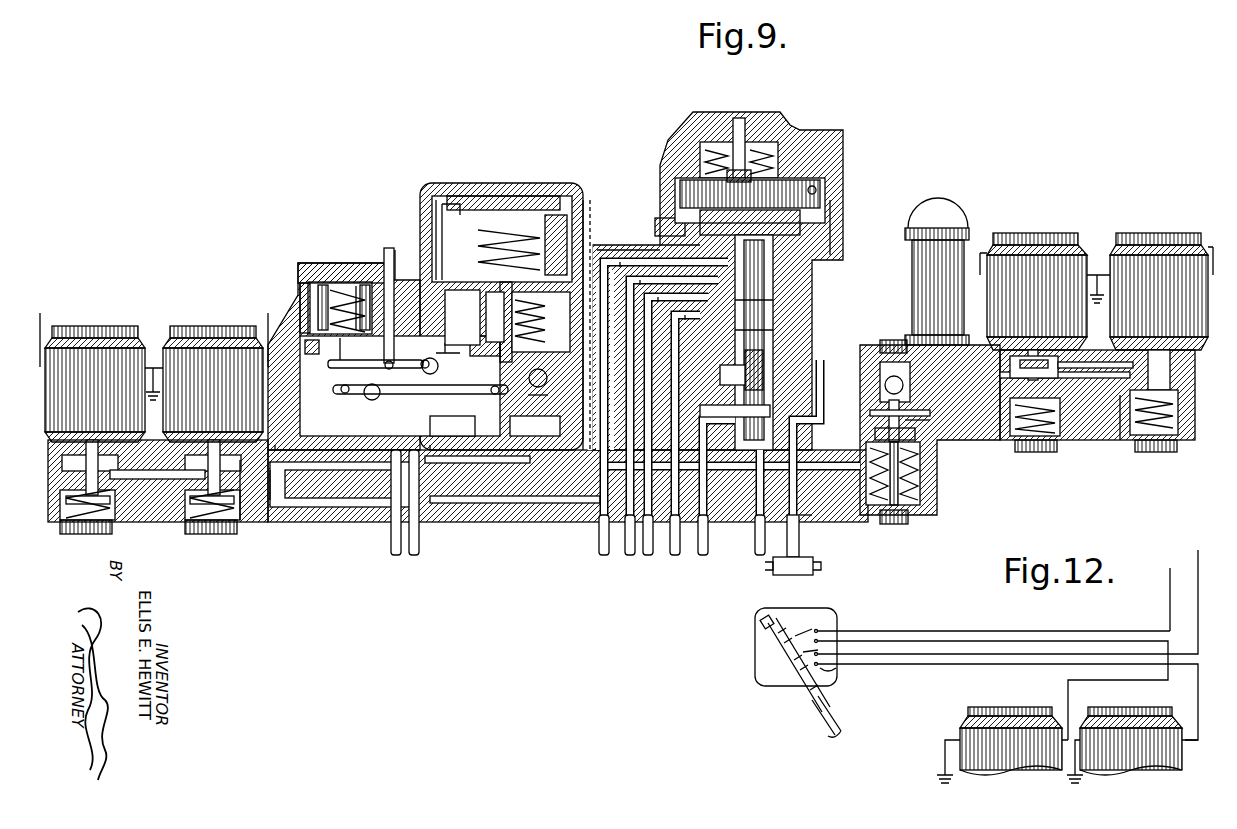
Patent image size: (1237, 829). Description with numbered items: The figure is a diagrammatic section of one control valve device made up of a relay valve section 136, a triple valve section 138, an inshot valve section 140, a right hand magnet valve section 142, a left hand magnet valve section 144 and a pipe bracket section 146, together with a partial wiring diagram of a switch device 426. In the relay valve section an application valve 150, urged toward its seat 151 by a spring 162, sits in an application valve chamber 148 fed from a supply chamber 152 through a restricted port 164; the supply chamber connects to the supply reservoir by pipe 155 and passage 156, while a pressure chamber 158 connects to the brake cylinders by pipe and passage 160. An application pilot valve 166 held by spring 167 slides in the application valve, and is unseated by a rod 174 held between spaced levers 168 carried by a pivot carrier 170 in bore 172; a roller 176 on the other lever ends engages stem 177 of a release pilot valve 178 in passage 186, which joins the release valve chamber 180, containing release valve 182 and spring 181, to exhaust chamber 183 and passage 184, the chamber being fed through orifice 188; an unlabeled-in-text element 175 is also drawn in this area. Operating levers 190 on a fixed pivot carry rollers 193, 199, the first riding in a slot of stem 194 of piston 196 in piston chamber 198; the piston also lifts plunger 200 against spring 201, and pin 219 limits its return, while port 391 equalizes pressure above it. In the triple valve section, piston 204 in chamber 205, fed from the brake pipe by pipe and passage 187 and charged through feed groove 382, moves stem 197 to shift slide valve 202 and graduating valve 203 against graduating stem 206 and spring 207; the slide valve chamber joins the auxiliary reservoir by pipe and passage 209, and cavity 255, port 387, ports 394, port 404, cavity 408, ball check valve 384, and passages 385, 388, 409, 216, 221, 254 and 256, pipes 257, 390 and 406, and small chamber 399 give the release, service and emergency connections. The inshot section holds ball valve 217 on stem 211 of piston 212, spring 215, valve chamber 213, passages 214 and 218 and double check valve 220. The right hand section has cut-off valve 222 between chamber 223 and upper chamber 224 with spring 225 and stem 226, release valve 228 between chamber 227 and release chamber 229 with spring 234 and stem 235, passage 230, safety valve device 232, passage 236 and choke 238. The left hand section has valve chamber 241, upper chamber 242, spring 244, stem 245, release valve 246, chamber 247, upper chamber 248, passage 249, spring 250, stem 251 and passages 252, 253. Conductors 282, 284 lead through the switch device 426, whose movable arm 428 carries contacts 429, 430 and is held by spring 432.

In FIG. 9, the relay valve section 136 is at (498, 183).
In FIG. 9, the triple valve section 138 is at (765, 128).
In FIG. 9, the inshot valve section 140 is at (868, 345).
In FIG. 9, the right hand magnet valve section 142 is at (1103, 440).
In FIG. 9, the left hand magnet valve section 144 is at (160, 520).
In FIG. 9, the pipe bracket section 146 is at (486, 522).
In FIG. 9, the application valve chamber 148 is at (345, 290).
In FIG. 9, the application valve 150 is at (366, 285).
In FIG. 9, the seat 151 is at (354, 350).
In FIG. 9, the supply chamber 152 is at (298, 268).
In FIG. 9, the pipe 155 is at (391, 550).
In FIG. 9, the passage 156 is at (295, 430).
In FIG. 9, the pressure chamber 158 is at (473, 345).
In FIG. 9, the pipe and passage 160 is at (419, 540).
In FIG. 9, the spring 162 is at (324, 285).
In FIG. 9, the restricted port 164 is at (302, 283).
In FIG. 9, the application pilot valve 166 is at (300, 300).
In FIG. 9, the spring 167 is at (352, 286).
In FIG. 9, the spaced levers 168 is at (345, 368).
In FIG. 9, the pivot carrier 170 is at (399, 355).
In FIG. 9, the bore 172 is at (389, 250).
In FIG. 9, the rod 174 is at (321, 351).
In FIG. 9, the stem 175 is at (520, 322).
In FIG. 9, the roller 176 is at (440, 373).
In FIG. 9, the stem 177 is at (452, 354).
In FIG. 9, the release pilot valve 178 is at (404, 280).
In FIG. 9, the release valve chamber 180 is at (585, 210).
In FIG. 9, the spring 181 is at (530, 232).
In FIG. 9, the release valve 182 is at (560, 215).
In FIG. 9, the exhaust chamber 183 is at (510, 196).
In FIG. 9, the passage 184 is at (582, 522).
In FIG. 9, the passage 186 is at (436, 200).
In FIG. 9, the pipe and passage 187 is at (800, 560).
In FIG. 9, the restricted orifice 188 is at (452, 210).
In FIG. 9, the operating levers 190 is at (420, 397).
In FIG. 9, the roller 193 is at (538, 378).
In FIG. 9, the stem 194 is at (538, 395).
In FIG. 9, the piston 196 is at (541, 425).
In FIG. 9, the stem 197 is at (773, 281).
In FIG. 9, the piston chamber 198 is at (512, 479).
In FIG. 9, the roller 199 is at (407, 374).
In FIG. 9, the plunger 200 is at (541, 322).
In FIG. 9, the spring 201 is at (534, 321).
In FIG. 9, the slide valve 202 is at (773, 300).
In FIG. 9, the graduating valve 203 is at (773, 360).
In FIG. 9, the piston 204 is at (805, 212).
In FIG. 9, the piston chamber 205 is at (825, 175).
In FIG. 9, the graduating stem 206 is at (780, 190).
In FIG. 9, the graduating spring 207 is at (745, 165).
In FIG. 9, the pipe and passage 209 is at (755, 520).
In FIG. 9, the stem 211 is at (935, 420).
In FIG. 9, the piston 212 is at (918, 440).
In FIG. 9, the valve chamber 213 is at (884, 362).
In FIG. 9, the passage 214 is at (1080, 440).
In FIG. 9, the spring 215 is at (920, 470).
In FIG. 9, the passage 216 is at (878, 304).
In FIG. 9, the ball valve 217 is at (905, 345).
In FIG. 9, the passage 218 is at (805, 522).
In FIG. 9, the pin 219 is at (608, 340).
In FIG. 9, the double check valve 220 is at (870, 382).
In FIG. 9, the passage 221 is at (695, 340).
In FIG. 9, the cut-off valve 222 is at (1130, 410).
In FIG. 9, the valve chamber 223 is at (1135, 420).
In FIG. 9, the upper chamber 224 is at (1164, 353).
In FIG. 9, the spring 225 is at (1155, 452).
In FIG. 9, the stem 226 is at (1159, 291).
In FIG. 9, the valve chamber 227 is at (1024, 340).
In FIG. 9, the release valve 228 is at (1034, 347).
In FIG. 9, the release chamber 229 is at (1036, 440).
In FIG. 9, the passage 230 is at (990, 340).
In FIG. 9, the safety valve device 232 is at (952, 225).
In FIG. 9, the spring 234 is at (1025, 452).
In FIG. 9, the stem 235 is at (1027, 348).
In FIG. 9, the passage 236 is at (1118, 440).
In FIG. 9, the choke 238 is at (1095, 353).
In FIG. 9, the valve chamber 241 is at (64, 525).
In FIG. 9, the upper chamber 242 is at (86, 440).
In FIG. 9, the spring 244 is at (80, 520).
In FIG. 9, the stem 245 is at (90, 445).
In FIG. 9, the release valve 246 is at (195, 520).
In FIG. 9, the valve chamber 247 is at (242, 522).
In FIG. 9, the upper chamber 248 is at (196, 430).
In FIG. 9, the passage 249 is at (168, 470).
In FIG. 9, the spring 250 is at (212, 534).
In FIG. 9, the stem 251 is at (213, 445).
In FIG. 9, the passage 252 is at (290, 505).
In FIG. 9, the passage 253 is at (340, 484).
In FIG. 9, the passage 254 is at (592, 365).
In FIG. 9, the cavity 255 is at (668, 245).
In FIG. 9, the passage 256 is at (610, 250).
In FIG. 9, the pipe 257 is at (599, 548).
In FIG. 12, the conductor 282 is at (1170, 580).
In FIG. 12, the conductor 284 is at (1198, 560).
In FIG. 9, the feed groove 382 is at (660, 225).
In FIG. 9, the ball check valve 384 is at (818, 190).
In FIG. 9, the passage 385 is at (506, 500).
In FIG. 9, the restricted port 387 is at (665, 281).
In FIG. 9, the passage 388 is at (594, 360).
In FIG. 9, the pipe 390 is at (627, 550).
In FIG. 9, the restricted port 391 is at (450, 426).
In FIG. 9, the ports 394 is at (733, 385).
In FIG. 9, the small chamber 399 is at (680, 552).
In FIG. 9, the port 404 is at (773, 330).
In FIG. 9, the pipe 406 is at (648, 552).
In FIG. 9, the cavity 408 is at (670, 301).
In FIG. 9, the passage 409 is at (679, 319).
In FIG. 12, the switch device 426 is at (835, 612).
In FIG. 12, the movable arm 428 is at (842, 730).
In FIG. 12, the contact 429 is at (768, 646).
In FIG. 12, the contact 430 is at (768, 672).
In FIG. 12, the spring 432 is at (840, 686).